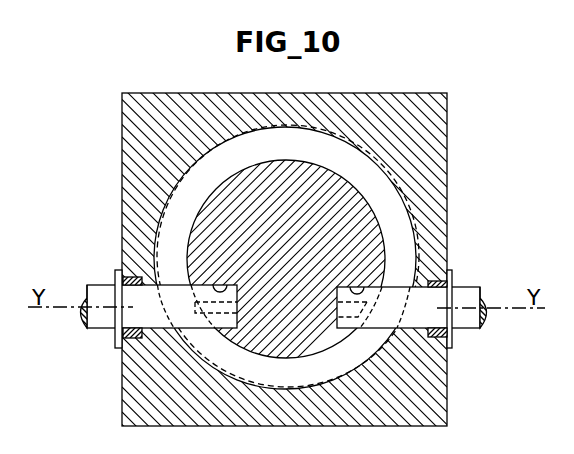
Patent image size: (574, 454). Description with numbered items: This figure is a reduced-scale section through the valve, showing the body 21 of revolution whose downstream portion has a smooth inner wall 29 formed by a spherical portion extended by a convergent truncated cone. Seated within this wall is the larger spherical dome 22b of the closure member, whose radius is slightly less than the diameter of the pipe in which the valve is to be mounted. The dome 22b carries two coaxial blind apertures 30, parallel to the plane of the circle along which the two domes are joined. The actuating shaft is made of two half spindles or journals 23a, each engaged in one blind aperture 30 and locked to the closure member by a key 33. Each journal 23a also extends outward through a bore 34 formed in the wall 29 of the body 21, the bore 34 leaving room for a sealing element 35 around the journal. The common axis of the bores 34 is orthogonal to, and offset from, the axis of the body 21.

The body 21 is at (397, 118).
The spherical dome 22b is at (293, 192).
The inner wall 29 is at (162, 237).
The journal 23a is at (147, 315).
The blind aperture 30 is at (218, 285).
The key 33 is at (205, 315).
The bore 34 is at (137, 286).
The sealing element 35 is at (131, 342).